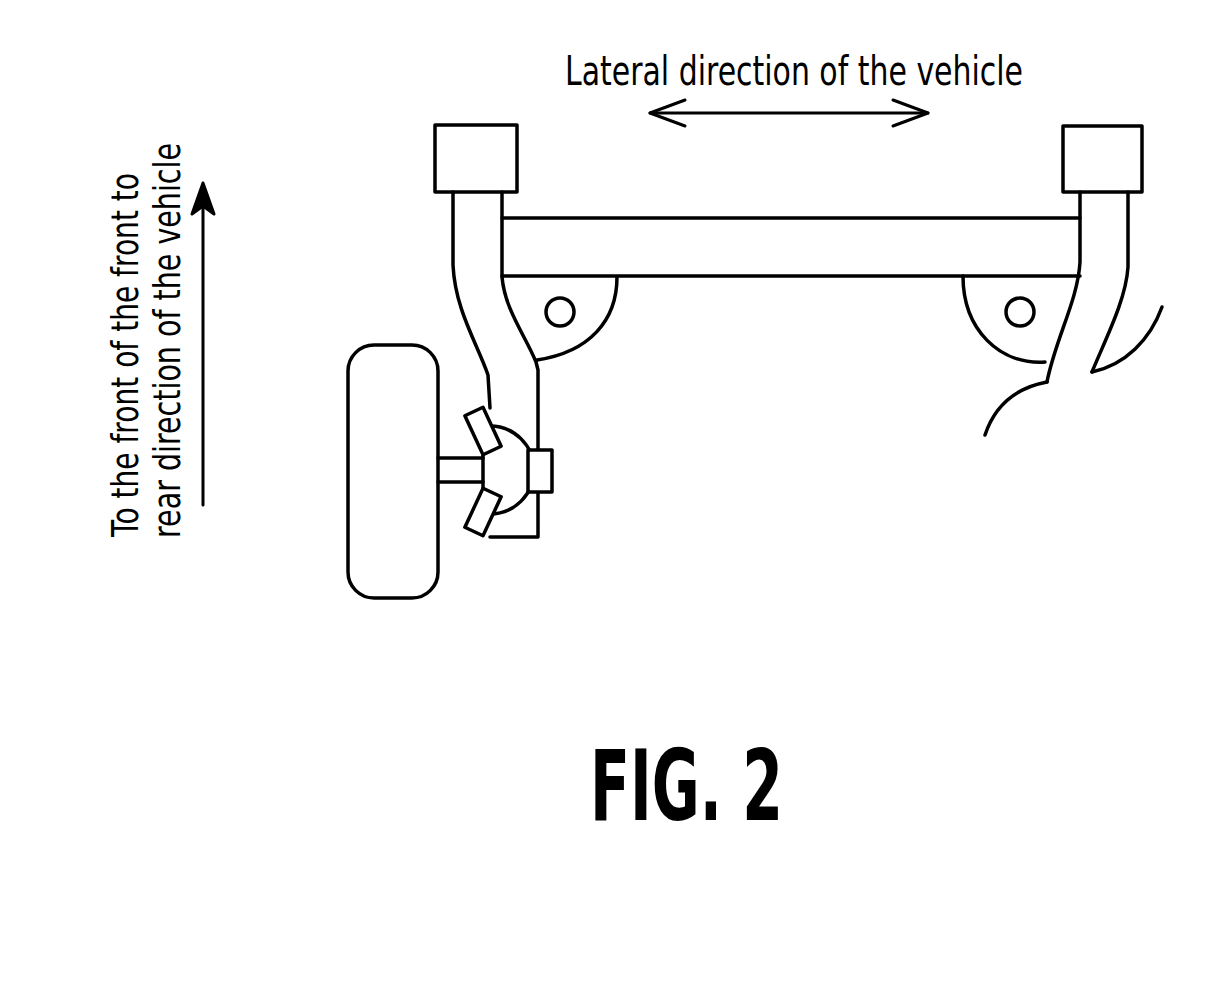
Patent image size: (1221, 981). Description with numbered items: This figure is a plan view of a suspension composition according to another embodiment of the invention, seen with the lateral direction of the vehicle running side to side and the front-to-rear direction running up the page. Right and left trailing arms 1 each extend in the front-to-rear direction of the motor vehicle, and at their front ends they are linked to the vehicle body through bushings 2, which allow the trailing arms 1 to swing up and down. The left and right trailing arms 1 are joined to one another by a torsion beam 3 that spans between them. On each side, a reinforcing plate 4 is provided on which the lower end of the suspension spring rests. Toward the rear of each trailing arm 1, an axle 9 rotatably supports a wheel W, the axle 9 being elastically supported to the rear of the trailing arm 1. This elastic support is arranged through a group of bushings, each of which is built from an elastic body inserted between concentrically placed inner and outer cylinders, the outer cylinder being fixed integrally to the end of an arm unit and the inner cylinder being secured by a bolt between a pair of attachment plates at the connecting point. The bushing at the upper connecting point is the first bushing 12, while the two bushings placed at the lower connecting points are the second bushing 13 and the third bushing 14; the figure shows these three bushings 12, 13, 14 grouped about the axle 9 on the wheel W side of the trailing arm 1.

The trailing arm 1 is at (460, 247).
The bushing 2 is at (492, 134).
The torsion beam 3 is at (598, 236).
The reinforcing plate 4 is at (587, 317).
The axle 9 is at (453, 480).
The first bushing 12 is at (545, 467).
The second bushing 13 is at (477, 422).
The third bushing 14 is at (483, 519).
The wheel W is at (365, 420).